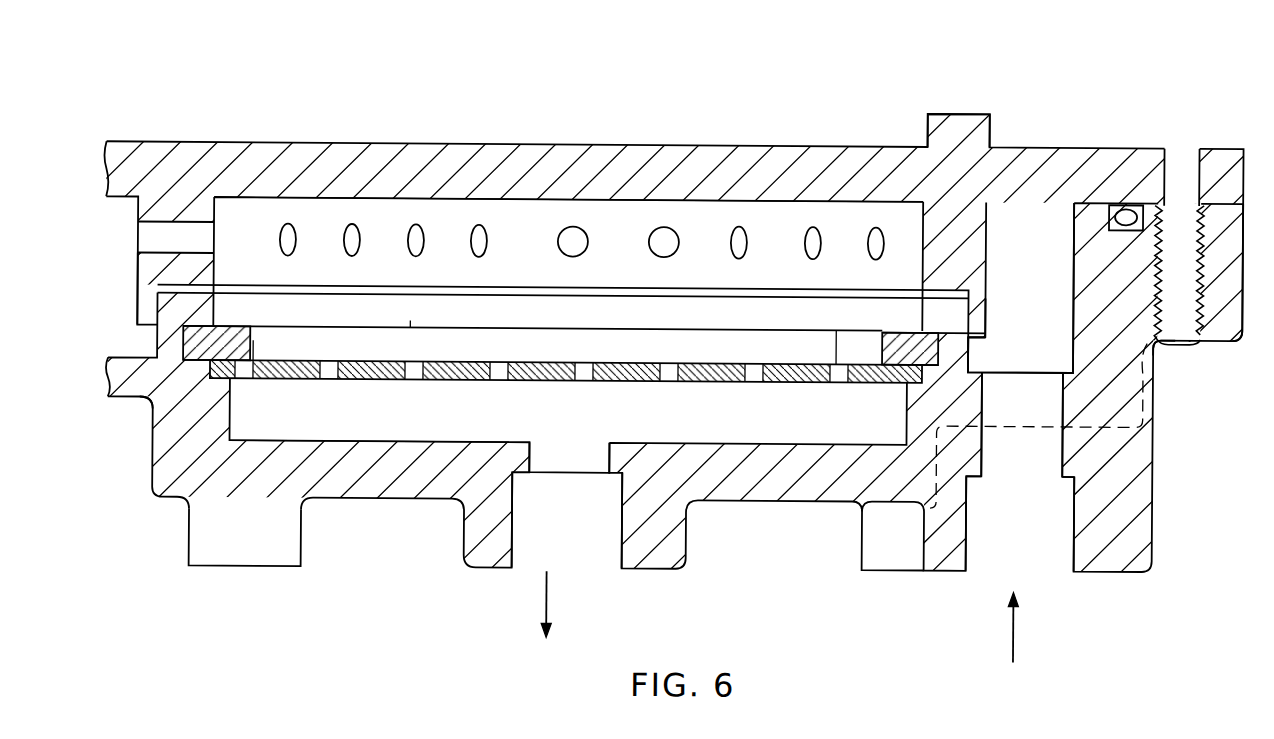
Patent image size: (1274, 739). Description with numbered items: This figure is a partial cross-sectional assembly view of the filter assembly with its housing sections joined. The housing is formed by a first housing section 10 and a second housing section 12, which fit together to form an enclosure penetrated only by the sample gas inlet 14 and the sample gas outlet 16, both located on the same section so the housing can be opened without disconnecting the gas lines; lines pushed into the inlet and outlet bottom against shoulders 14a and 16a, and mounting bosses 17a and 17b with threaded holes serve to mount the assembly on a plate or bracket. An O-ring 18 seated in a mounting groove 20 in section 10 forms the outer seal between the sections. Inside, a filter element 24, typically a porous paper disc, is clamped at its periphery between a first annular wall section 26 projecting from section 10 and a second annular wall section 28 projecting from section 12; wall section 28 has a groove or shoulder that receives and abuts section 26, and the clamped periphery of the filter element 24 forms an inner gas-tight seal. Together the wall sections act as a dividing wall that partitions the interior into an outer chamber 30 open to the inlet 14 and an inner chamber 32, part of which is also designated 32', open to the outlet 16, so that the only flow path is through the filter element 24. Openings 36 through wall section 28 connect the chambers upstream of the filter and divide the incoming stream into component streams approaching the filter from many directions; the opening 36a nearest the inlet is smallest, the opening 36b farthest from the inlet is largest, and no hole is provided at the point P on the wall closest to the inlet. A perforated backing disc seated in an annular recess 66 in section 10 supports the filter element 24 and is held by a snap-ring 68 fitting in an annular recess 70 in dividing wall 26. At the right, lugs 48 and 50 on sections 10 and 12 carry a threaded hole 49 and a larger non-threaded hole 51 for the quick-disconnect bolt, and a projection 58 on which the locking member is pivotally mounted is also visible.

The first housing section 10 is at (735, 502).
The second housing section 12 is at (832, 146).
The sample gas inlet 14 is at (1013, 552).
The shoulder 14a is at (968, 477).
The sample gas outlet 16 is at (560, 548).
The shoulder 16a is at (517, 476).
The mounting boss 17a is at (248, 572).
The mounting boss 17b is at (880, 572).
The O-ring 18 is at (1108, 220).
The mounting groove 20 is at (1108, 211).
The filter element 24 is at (738, 289).
The first annular wall section 26 is at (158, 333).
The second annular wall section 28 is at (137, 273).
The outer chamber 30 is at (116, 218).
The inner chamber 32 is at (568, 309).
The part cavity 32' is at (378, 497).
The openings 36 is at (412, 226).
The opening closest to inlet 36a is at (870, 240).
The opening furthest from inlet 36b is at (165, 218).
The lug 48 is at (1242, 322).
The threaded hole 49 is at (1150, 350).
The lug 50 is at (1240, 146).
The non-threaded hole 51 is at (1153, 170).
The projection 58 is at (925, 139).
The annular recess 66 is at (218, 381).
The snap-ring 68 is at (410, 322).
The annular recess 70 is at (151, 404).
The point P is at (988, 240).